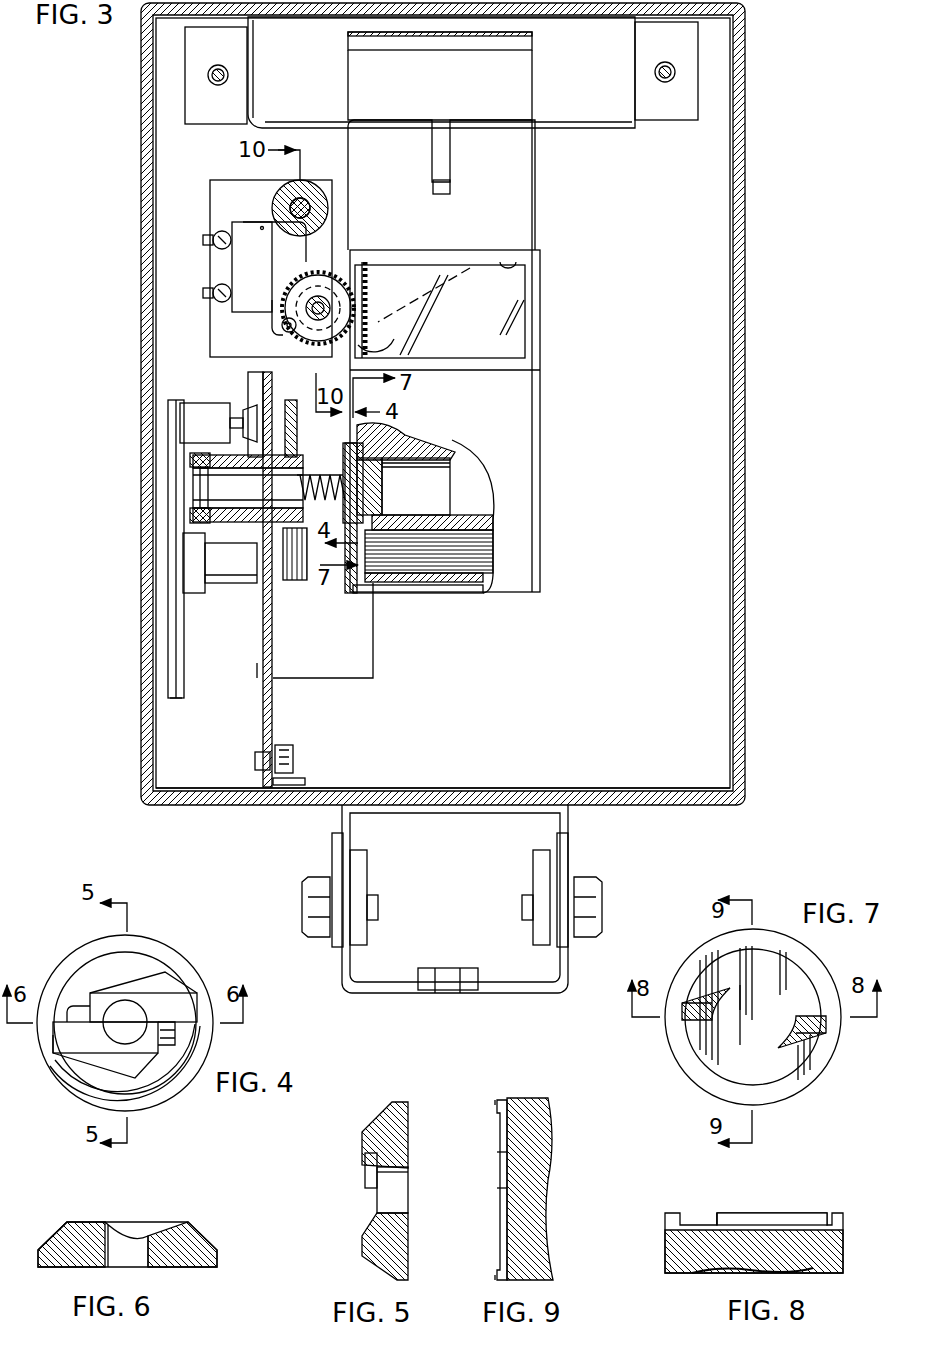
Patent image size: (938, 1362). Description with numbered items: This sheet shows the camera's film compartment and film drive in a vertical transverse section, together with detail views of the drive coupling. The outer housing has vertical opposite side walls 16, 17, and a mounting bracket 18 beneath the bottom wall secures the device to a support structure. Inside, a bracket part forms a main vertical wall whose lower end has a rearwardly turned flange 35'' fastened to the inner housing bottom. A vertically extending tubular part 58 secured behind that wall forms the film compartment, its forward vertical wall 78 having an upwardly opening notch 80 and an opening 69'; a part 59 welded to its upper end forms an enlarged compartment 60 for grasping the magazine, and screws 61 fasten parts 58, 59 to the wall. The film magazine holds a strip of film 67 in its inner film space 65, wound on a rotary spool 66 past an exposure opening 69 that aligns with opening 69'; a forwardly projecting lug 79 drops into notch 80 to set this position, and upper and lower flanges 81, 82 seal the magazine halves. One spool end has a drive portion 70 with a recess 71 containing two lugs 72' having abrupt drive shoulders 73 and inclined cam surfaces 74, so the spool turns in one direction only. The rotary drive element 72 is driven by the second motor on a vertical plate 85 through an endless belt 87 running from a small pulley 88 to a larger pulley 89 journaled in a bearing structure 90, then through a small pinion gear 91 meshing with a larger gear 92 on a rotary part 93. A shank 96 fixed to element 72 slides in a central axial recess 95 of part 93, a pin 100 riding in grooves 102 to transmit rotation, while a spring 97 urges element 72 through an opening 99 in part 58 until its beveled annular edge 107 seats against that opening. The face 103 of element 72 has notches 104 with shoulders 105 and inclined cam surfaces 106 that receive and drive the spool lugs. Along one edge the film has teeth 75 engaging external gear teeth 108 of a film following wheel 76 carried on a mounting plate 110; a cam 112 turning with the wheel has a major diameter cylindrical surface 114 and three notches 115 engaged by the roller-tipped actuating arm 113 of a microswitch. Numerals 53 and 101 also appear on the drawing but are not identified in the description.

In FIG. 3, the side wall 16 is at (745, 265).
In FIG. 3, the side wall 17 is at (150, 372).
In FIG. 3, the mounting bracket 18 is at (586, 862).
In FIG. 3, the rearwardly turned flange 35'' is at (443, 758).
In FIG. 3, the switch bracket 53 is at (240, 230).
In FIG. 3, the tubular part 58 is at (530, 378).
In FIG. 3, the upper part 59 is at (600, 128).
In FIG. 3, the enlarged compartment 60 is at (635, 50).
In FIG. 3, the screws 61 is at (216, 66).
In FIG. 3, the inner film space 65 is at (432, 562).
In FIG. 3, the rotary spool 66 is at (472, 530).
In FIG. 9, the rotary spool 66 is at (545, 1140).
In FIG. 3, the film 67 is at (512, 280).
In FIG. 3, the exposure opening 69 is at (492, 315).
In FIG. 3, the front wall opening 69' is at (543, 242).
In FIG. 7, the drive portion 70 is at (792, 1112).
In FIG. 7, the recess 71 is at (718, 1088).
In FIG. 8, the recess 71 is at (795, 1220).
In FIG. 3, the rotary drive element 72 is at (403, 486).
In FIG. 4, the rotary drive element 72 is at (125, 997).
In FIG. 6, the rotary drive element 72 is at (131, 1224).
In FIG. 7, the lugs 72' is at (751, 1014).
In FIG. 9, the lugs 72' is at (481, 1167).
In FIG. 7, the drive shoulders 73 is at (800, 1010).
In FIG. 9, the drive shoulders 73 is at (500, 1192).
In FIG. 7, the inclined cam surfaces 74 is at (705, 985).
In FIG. 9, the inclined cam surfaces 74 is at (503, 1160).
In FIG. 8, the inclined cam surfaces 74 is at (730, 1220).
In FIG. 3, the teeth 75 is at (372, 352).
In FIG. 3, the film movement following wheel 76 is at (378, 290).
In FIG. 3, the forward vertical wall 78 is at (518, 196).
In FIG. 3, the lug 79 is at (433, 186).
In FIG. 3, the notch 80 is at (450, 136).
In FIG. 3, the upper flanges 81 is at (348, 40).
In FIG. 3, the lower flanges 82 is at (396, 595).
In FIG. 3, the vertical plate 85 is at (263, 736).
In FIG. 3, the endless belt 87 is at (180, 700).
In FIG. 3, the small pulley 88 is at (208, 396).
In FIG. 3, the larger diameter pulley 89 is at (184, 666).
In FIG. 3, the bearing structure 90 is at (236, 570).
In FIG. 3, the pinion gear 91 is at (293, 580).
In FIG. 3, the larger gear 92 is at (296, 405).
In FIG. 3, the rotary part 93 is at (240, 522).
In FIG. 3, the central axial recess 95 is at (295, 462).
In FIG. 3, the shank 96 is at (248, 488).
In FIG. 3, the spring 97 is at (363, 495).
In FIG. 3, the opening 99 is at (385, 430).
In FIG. 3, the pin 100 is at (200, 488).
In FIG. 3, the plate 101 is at (195, 516).
In FIG. 3, the grooves 102 is at (190, 460).
In FIG. 4, the face 103 is at (178, 1032).
In FIG. 4, the notches 104 is at (180, 1000).
In FIG. 4, the shoulders 105 is at (72, 1010).
In FIG. 5, the shoulders 105 is at (368, 1190).
In FIG. 4, the inclined cam surfaces 106 is at (92, 1060).
In FIG. 5, the inclined cam surfaces 106 is at (362, 1162).
In FIG. 3, the beveled annular edge 107 is at (372, 440).
In FIG. 4, the beveled annular edge 107 is at (170, 1085).
In FIG. 6, the beveled annular edge 107 is at (50, 1240).
In FIG. 3, the gear teeth 108 is at (358, 262).
In FIG. 3, the mounting plate 110 is at (214, 180).
In FIG. 3, the cam 112 is at (310, 283).
In FIG. 3, the actuating arm 113 is at (268, 324).
In FIG. 3, the major diameter cylindrical surface 114 is at (230, 270).
In FIG. 3, the notches 115 is at (447, 262).